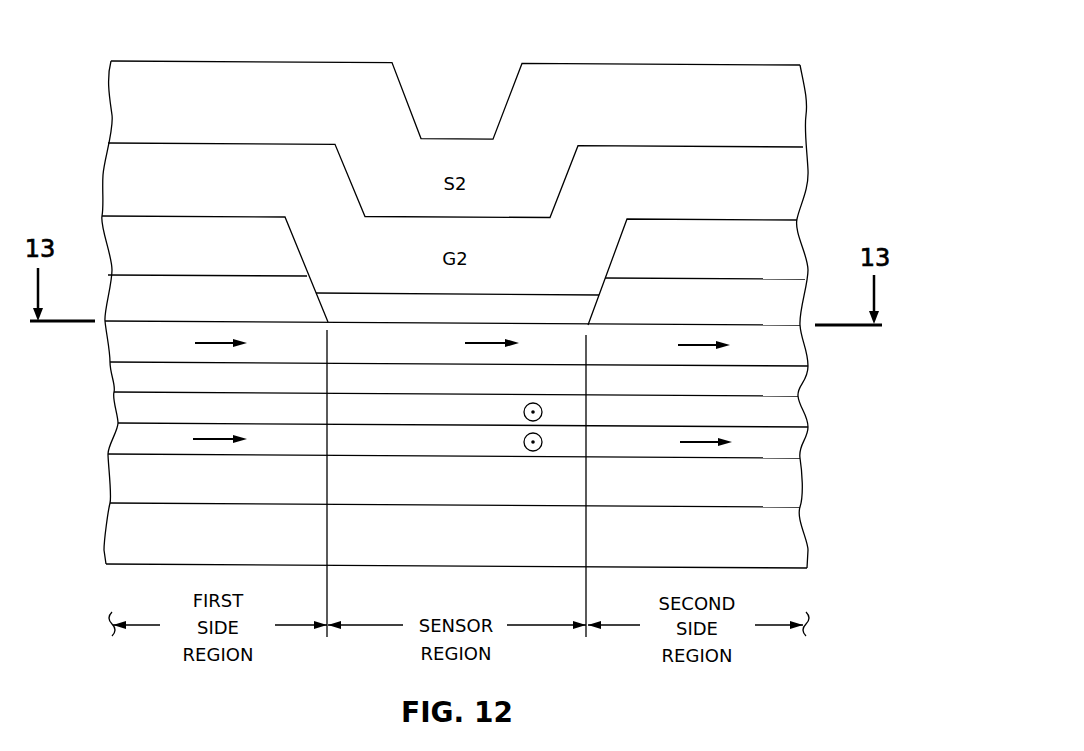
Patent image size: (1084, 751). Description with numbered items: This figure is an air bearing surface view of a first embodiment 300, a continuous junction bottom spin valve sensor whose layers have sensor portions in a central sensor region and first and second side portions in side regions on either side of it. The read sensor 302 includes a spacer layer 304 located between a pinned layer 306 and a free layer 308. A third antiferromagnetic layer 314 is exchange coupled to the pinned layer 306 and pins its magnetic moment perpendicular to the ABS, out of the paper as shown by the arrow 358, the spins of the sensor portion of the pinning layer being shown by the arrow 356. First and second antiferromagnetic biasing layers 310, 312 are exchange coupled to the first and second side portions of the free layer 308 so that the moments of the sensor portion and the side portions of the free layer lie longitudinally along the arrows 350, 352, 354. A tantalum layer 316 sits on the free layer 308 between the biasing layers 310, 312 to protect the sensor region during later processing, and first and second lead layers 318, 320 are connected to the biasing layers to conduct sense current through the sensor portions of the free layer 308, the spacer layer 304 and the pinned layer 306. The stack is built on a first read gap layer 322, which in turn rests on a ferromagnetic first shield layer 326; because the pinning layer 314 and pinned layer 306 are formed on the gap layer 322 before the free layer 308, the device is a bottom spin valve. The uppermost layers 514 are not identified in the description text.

The first embodiment 300 is at (650, 48).
The second gap and second shield layers 514 is at (117, 86).
The first lead layer 318 is at (158, 230).
The first antiferromagnetic biasing layer 310 is at (251, 287).
The second lead layer 320 is at (667, 240).
The second antiferromagnetic biasing layer 312 is at (751, 292).
The tantalum layer 316 is at (408, 300).
The read sensor 302 is at (364, 320).
The free layer 308 is at (118, 345).
The spacer layer 304 is at (118, 378).
The pinned layer 306 is at (125, 407).
The third antiferromagnetic layer 314 is at (115, 437).
The first read gap layer 322 is at (115, 480).
The first shield layer 326 is at (118, 533).
The arrow 350 is at (484, 338).
The arrow 352 is at (204, 344).
The arrow 354 is at (690, 347).
The arrow 356 is at (543, 442).
The arrow 358 is at (543, 412).